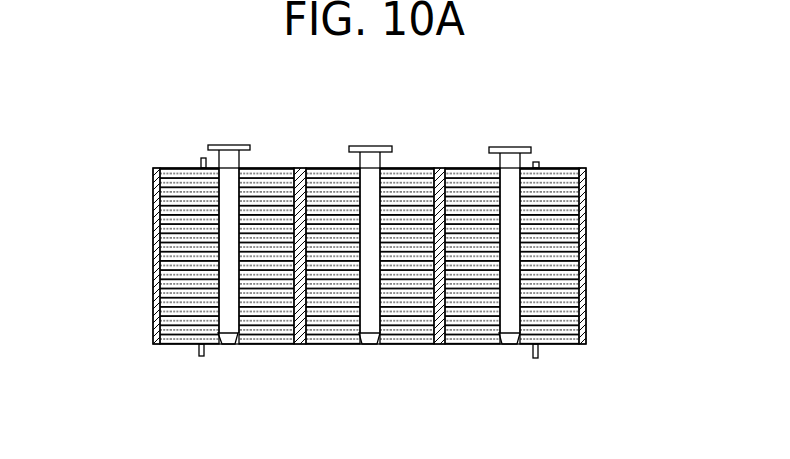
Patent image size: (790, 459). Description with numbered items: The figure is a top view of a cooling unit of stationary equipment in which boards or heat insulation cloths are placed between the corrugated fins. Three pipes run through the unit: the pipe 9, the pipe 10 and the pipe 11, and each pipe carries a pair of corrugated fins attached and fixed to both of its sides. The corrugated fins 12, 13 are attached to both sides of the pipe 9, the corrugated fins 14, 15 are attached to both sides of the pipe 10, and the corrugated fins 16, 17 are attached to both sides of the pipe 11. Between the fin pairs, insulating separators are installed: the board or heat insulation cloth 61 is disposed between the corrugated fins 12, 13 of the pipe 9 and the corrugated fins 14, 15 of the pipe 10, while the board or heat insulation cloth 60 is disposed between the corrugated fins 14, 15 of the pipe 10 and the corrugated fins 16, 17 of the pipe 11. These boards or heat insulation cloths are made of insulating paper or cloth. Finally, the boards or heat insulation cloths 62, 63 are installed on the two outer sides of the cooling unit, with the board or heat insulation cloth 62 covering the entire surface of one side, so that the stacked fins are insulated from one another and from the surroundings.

The pipe 9 is at (512, 342).
The pipe 10 is at (370, 338).
The pipe 11 is at (226, 337).
The corrugated fin 12 is at (563, 293).
The corrugated fin 13 is at (475, 327).
The corrugated fin 14 is at (408, 330).
The corrugated fin 15 is at (332, 327).
The corrugated fin 16 is at (265, 327).
The corrugated fin 17 is at (178, 329).
The board or heat insulation cloth 60 is at (306, 168).
The board or heat insulation cloth 61 is at (445, 168).
The board or heat insulation cloth 62 is at (587, 230).
The board or heat insulation cloth 63 is at (152, 240).